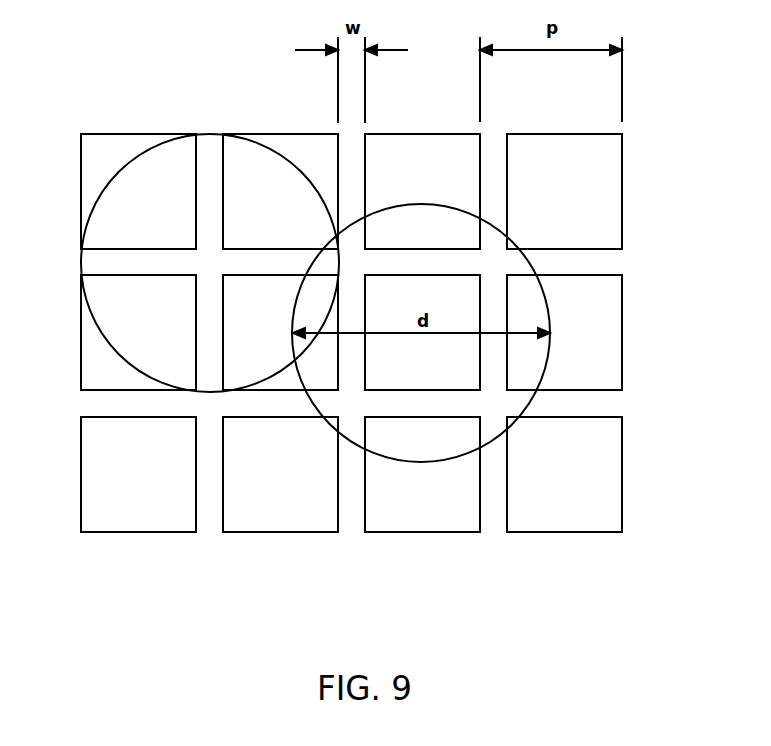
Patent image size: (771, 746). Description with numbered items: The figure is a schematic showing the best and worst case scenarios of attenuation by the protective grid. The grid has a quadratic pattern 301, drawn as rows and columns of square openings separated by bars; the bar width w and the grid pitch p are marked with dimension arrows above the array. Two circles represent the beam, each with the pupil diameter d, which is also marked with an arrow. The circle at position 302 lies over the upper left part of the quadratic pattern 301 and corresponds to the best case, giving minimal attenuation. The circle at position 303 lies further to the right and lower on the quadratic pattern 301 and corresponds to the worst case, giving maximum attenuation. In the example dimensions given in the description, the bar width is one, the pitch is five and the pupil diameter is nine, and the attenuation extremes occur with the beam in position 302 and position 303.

The quadratic pattern 301 is at (622, 190).
The position 302 is at (152, 147).
The position 303 is at (413, 462).